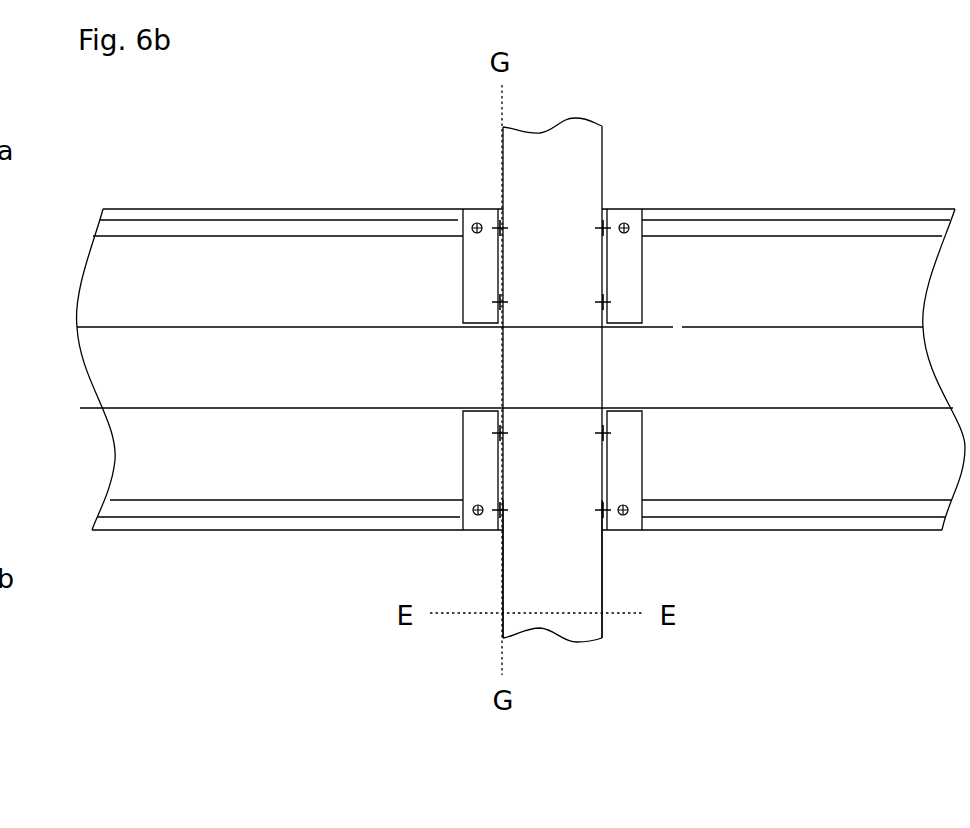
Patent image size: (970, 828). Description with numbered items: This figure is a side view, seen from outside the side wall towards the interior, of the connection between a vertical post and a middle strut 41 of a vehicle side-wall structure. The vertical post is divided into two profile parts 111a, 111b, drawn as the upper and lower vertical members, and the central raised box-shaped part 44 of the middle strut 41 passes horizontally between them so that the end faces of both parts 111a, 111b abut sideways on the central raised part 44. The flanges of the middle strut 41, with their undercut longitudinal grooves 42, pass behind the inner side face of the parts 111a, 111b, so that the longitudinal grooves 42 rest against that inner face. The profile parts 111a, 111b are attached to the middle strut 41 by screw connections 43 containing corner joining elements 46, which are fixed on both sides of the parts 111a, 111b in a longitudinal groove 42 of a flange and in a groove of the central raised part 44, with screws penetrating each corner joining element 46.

The middle strut 41 is at (118, 257).
The longitudinal groove 42 is at (230, 230).
The screw connection 43 is at (483, 330).
The central raised box-shaped part 44 is at (137, 372).
The corner joining element 46 is at (470, 292).
The profile part 111a is at (535, 148).
The profile part 111b is at (543, 613).